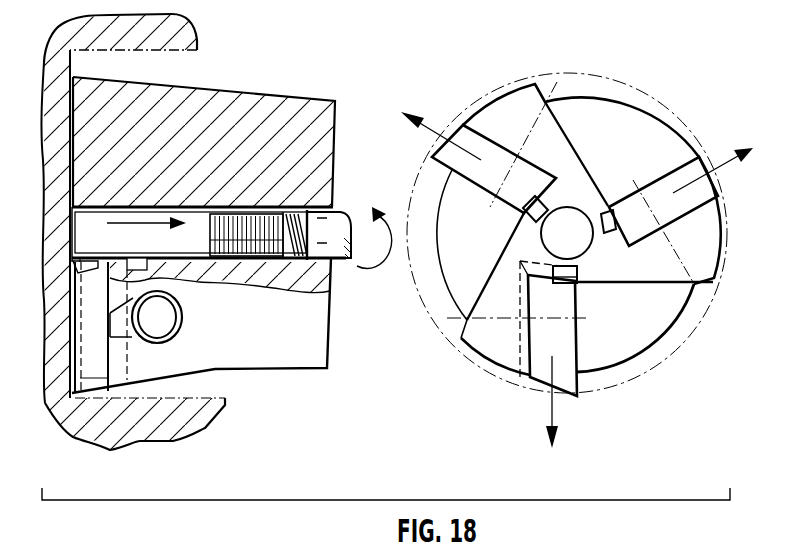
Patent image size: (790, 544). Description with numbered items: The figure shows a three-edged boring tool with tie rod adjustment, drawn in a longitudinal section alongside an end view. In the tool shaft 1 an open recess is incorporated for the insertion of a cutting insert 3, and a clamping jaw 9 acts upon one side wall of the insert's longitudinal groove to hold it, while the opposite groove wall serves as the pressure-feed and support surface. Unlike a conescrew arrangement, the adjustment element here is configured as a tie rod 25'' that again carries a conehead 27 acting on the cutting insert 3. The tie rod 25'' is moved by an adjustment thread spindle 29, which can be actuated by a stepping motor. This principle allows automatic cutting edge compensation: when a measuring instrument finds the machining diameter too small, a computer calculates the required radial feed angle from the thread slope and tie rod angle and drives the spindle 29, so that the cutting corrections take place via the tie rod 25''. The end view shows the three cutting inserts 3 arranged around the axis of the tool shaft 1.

The tool shaft 1 is at (263, 360).
The cutting insert 3 is at (69, 396).
The clamping jaw 9 is at (112, 334).
The tie rod 25'' is at (397, 214).
The conehead 27 is at (72, 262).
The adjustment thread spindle 29 is at (338, 222).